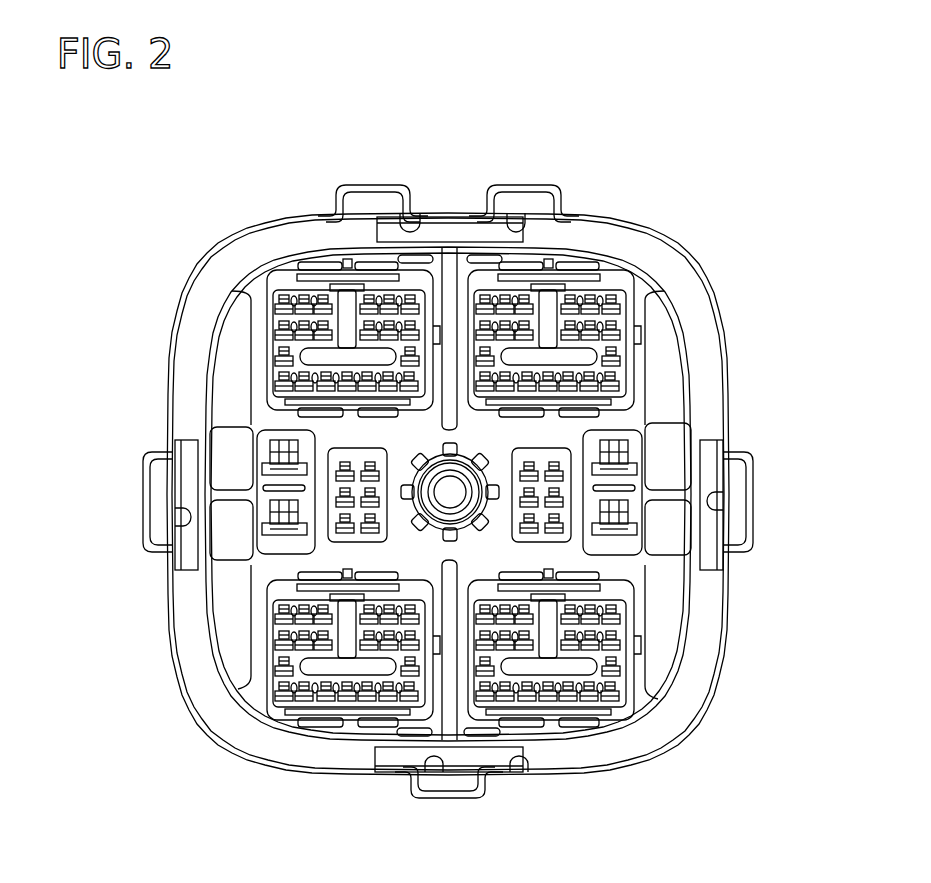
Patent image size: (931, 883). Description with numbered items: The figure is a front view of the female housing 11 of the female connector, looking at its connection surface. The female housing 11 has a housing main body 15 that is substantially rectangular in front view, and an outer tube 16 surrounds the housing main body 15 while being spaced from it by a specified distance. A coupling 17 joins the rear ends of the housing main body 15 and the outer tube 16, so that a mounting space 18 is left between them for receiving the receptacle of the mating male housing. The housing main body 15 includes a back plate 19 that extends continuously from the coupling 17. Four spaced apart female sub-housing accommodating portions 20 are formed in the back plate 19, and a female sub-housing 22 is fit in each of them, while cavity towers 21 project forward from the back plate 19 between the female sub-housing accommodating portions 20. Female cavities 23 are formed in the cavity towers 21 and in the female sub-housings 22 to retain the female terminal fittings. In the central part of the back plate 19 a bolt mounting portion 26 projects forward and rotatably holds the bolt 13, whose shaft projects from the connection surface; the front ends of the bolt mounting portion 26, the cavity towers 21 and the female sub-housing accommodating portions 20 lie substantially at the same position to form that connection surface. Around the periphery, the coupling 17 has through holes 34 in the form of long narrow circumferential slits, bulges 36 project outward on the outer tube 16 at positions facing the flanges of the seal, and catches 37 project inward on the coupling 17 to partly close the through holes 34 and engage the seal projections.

The female housing 11 is at (590, 216).
The bolt 13 is at (445, 488).
The housing main body 15 is at (637, 283).
The outer tube 16 is at (717, 305).
The coupling 17 is at (712, 375).
The mounting space 18 is at (712, 628).
The back plate 19 is at (660, 655).
The female sub-housing accommodating portion 20 is at (258, 677).
The cavity tower 21 is at (337, 451).
The female sub-housing 22 is at (287, 293).
The female cavity 23 is at (282, 530).
The bolt mounting portion 26 is at (480, 527).
The through hole 34 is at (512, 222).
The bulge 36 is at (362, 185).
The catch 37 is at (404, 214).